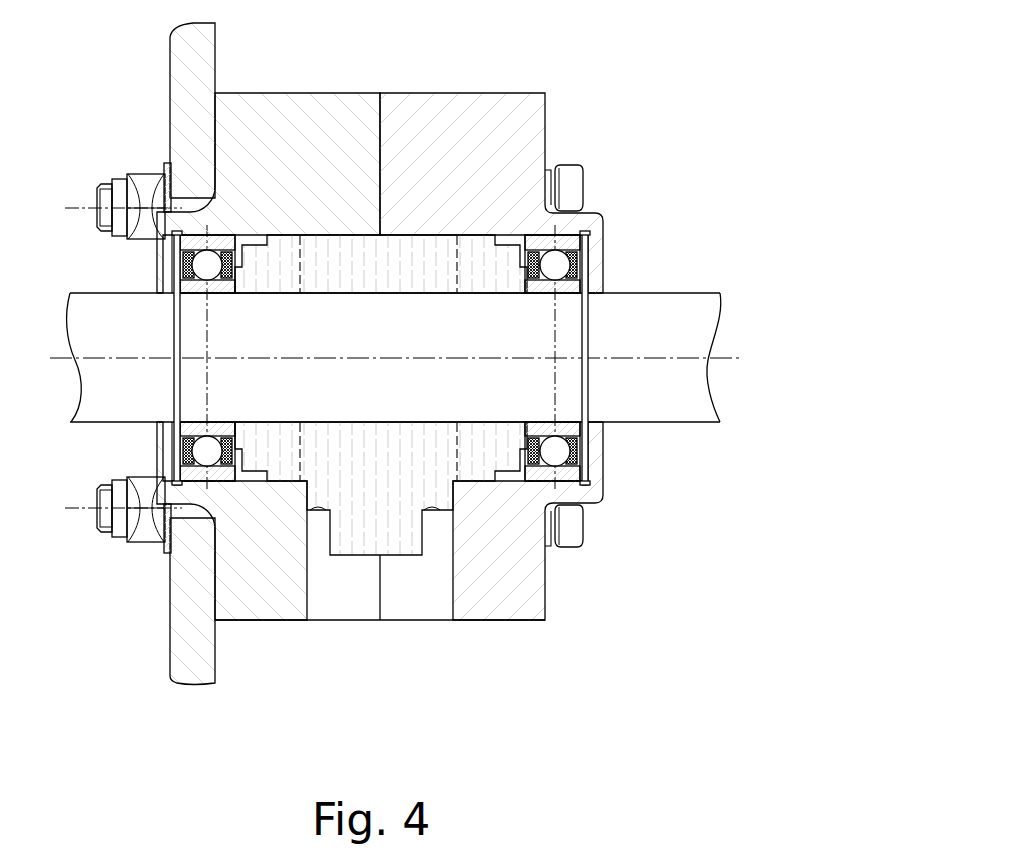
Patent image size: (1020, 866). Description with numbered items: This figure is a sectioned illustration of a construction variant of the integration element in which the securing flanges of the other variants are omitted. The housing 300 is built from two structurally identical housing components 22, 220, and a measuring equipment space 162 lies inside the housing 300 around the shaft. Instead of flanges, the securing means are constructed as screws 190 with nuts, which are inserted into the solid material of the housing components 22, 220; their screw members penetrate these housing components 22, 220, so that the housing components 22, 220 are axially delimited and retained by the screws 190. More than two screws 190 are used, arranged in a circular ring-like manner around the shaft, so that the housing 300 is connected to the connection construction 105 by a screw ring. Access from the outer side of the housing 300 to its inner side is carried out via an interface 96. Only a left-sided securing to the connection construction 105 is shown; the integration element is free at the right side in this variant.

The housing component 22 is at (303, 101).
The connection construction 105 is at (179, 78).
The securing means 190 is at (568, 178).
The measuring equipment space 162 is at (402, 276).
The housing component 220 is at (523, 578).
The housing 300 is at (517, 622).
The interface 96 is at (381, 589).